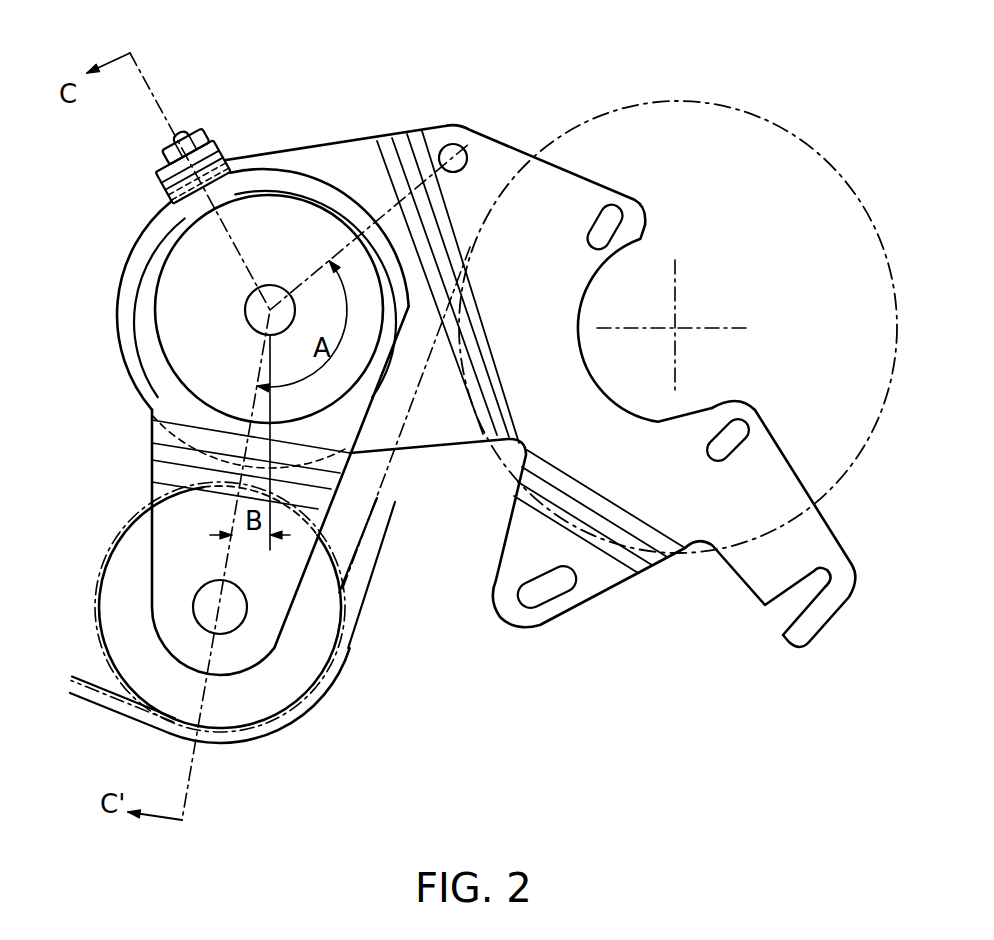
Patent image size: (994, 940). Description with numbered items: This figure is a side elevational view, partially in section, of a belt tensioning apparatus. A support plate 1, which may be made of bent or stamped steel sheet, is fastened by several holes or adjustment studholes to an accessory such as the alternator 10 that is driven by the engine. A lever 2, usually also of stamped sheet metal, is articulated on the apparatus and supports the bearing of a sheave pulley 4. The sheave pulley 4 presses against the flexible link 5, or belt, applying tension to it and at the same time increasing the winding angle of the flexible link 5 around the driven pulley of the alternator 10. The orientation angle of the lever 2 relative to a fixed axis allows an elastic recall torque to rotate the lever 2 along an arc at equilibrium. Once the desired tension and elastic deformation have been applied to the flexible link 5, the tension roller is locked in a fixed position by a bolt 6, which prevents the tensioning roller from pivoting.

The support plate 1 is at (362, 154).
The lever 2 is at (163, 386).
The sheave pulley 4 is at (258, 697).
The flexible link 5 is at (355, 598).
The bolt 6 is at (160, 158).
The alternator 10 is at (711, 133).